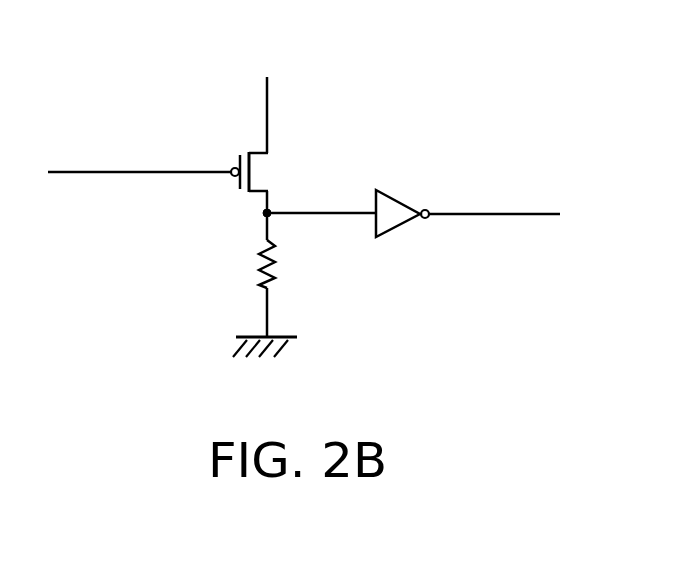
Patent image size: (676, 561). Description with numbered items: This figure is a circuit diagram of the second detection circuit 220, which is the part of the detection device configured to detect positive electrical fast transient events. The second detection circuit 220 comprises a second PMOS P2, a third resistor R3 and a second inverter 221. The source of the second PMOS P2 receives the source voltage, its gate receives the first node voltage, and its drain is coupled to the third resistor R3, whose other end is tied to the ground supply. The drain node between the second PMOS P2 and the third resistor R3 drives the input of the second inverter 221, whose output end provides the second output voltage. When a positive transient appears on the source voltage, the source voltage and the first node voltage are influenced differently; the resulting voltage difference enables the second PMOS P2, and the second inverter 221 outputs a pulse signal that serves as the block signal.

The second detection circuit 220 is at (450, 49).
The second inverter 221 is at (399, 201).
The second PMOS P2 is at (262, 170).
The third resistor R3 is at (275, 258).